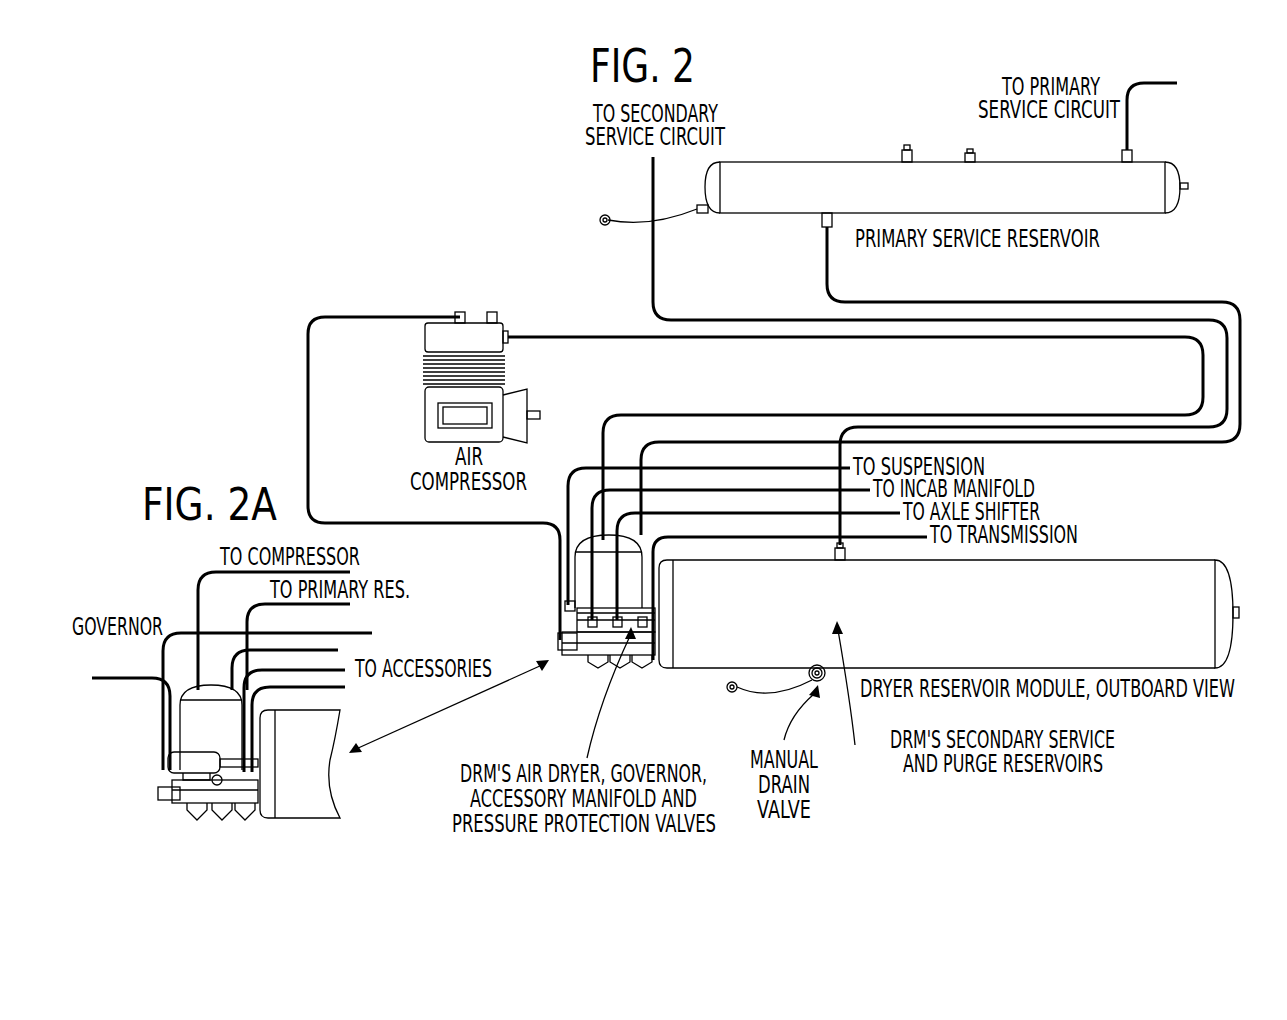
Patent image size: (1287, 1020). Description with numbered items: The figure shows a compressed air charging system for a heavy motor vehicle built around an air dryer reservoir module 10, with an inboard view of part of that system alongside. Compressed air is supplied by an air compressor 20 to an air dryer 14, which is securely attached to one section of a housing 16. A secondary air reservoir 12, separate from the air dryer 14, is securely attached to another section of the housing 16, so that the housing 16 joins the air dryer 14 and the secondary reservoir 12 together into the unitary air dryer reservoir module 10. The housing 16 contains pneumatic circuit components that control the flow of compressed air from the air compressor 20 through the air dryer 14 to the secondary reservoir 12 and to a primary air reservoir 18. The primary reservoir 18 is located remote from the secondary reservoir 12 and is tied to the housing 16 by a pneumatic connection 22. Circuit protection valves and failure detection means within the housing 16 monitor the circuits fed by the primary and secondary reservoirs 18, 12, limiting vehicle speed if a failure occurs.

In FIG. 2, the air dryer reservoir module 10 is at (872, 616).
In FIG. 2A, the air dryer reservoir module 10 is at (248, 713).
In FIG. 2, the secondary air reservoir 12 is at (1119, 549).
In FIG. 2A, the secondary air reservoir 12 is at (313, 787).
In FIG. 2, the air dryer 14 is at (578, 570).
In FIG. 2A, the air dryer 14 is at (190, 668).
In FIG. 2, the housing 16 is at (581, 658).
In FIG. 2A, the housing 16 is at (182, 801).
In FIG. 2, the primary air reservoir 18 is at (768, 224).
In FIG. 2, the air compressor 20 is at (517, 347).
In FIG. 2, the pneumatic connection 22 is at (1092, 297).